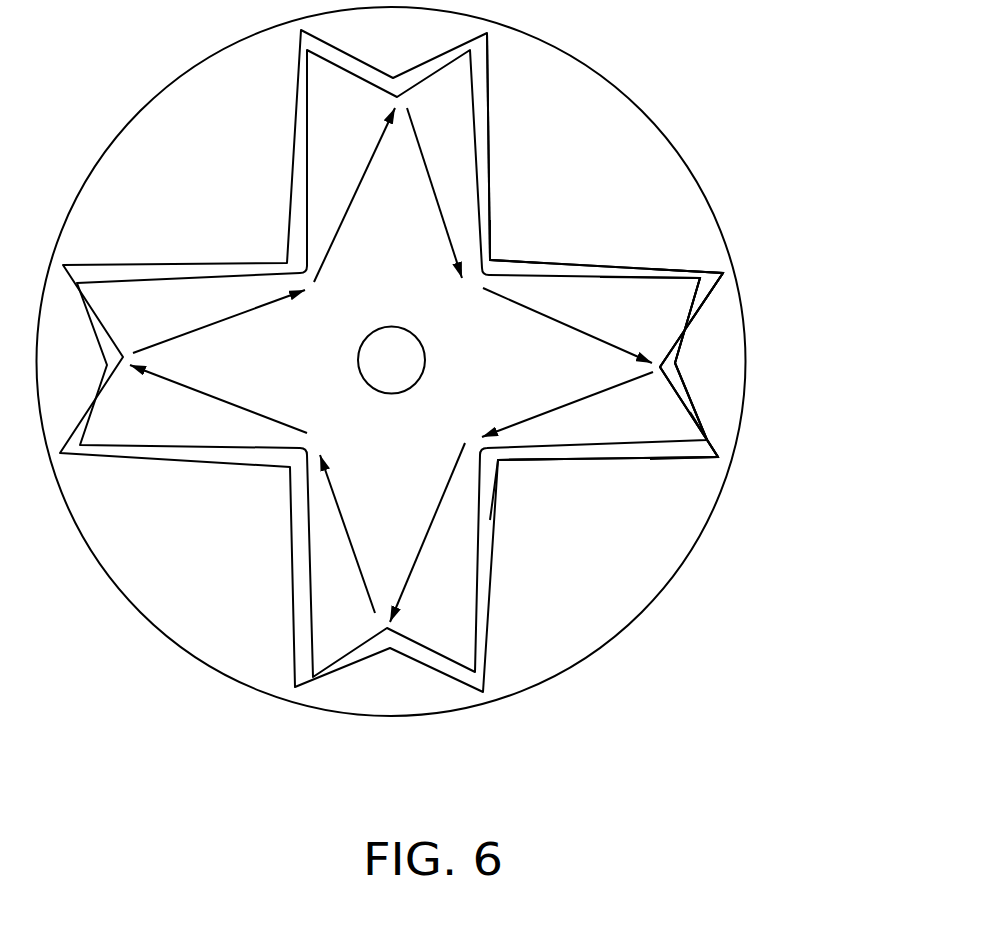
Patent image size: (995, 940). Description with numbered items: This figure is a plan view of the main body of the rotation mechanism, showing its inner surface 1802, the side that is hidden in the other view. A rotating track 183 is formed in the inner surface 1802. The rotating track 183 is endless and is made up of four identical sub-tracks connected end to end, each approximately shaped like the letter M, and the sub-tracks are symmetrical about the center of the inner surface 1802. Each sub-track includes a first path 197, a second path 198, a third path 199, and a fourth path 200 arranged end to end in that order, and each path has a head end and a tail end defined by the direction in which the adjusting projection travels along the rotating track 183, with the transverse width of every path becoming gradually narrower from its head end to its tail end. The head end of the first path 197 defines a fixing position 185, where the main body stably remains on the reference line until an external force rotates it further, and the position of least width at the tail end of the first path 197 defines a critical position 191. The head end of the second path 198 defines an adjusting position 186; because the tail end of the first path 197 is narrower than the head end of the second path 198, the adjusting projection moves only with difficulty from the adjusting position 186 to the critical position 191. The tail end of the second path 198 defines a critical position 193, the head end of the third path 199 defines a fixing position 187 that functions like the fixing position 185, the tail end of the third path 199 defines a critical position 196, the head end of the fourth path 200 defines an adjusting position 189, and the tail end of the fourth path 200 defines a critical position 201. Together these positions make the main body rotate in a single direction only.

The rotating track 183 is at (483, 90).
The fixing position 185 is at (490, 260).
The first path 197 is at (587, 268).
The critical position 191 is at (698, 272).
The adjusting position 186 is at (716, 270).
The second path 198 is at (697, 307).
The critical position 193 is at (673, 358).
The fixing position 187 is at (665, 368).
The third path 199 is at (692, 410).
The critical position 196 is at (705, 437).
The adjusting position 189 is at (723, 453).
The fourth path 200 is at (608, 453).
The inner surface 1802 is at (608, 558).
The critical position 201 is at (500, 463).